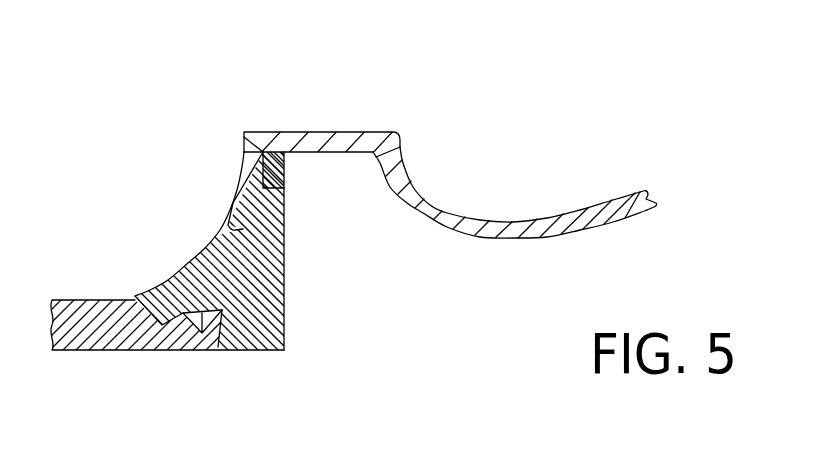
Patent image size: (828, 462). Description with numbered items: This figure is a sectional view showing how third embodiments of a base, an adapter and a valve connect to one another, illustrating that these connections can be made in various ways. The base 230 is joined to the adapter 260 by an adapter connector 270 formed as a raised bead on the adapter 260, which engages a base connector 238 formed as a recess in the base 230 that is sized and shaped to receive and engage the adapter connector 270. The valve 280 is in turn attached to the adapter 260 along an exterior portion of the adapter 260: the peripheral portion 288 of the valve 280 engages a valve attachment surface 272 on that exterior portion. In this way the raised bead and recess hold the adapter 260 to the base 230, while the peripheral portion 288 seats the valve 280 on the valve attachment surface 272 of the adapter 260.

The base 230 is at (112, 350).
The base connector 238 is at (212, 350).
The adapter 260 is at (187, 263).
The adapter connector 270 is at (222, 330).
The valve attachment surface 272 is at (285, 188).
The valve 280 is at (482, 237).
The peripheral portion 288 is at (312, 132).